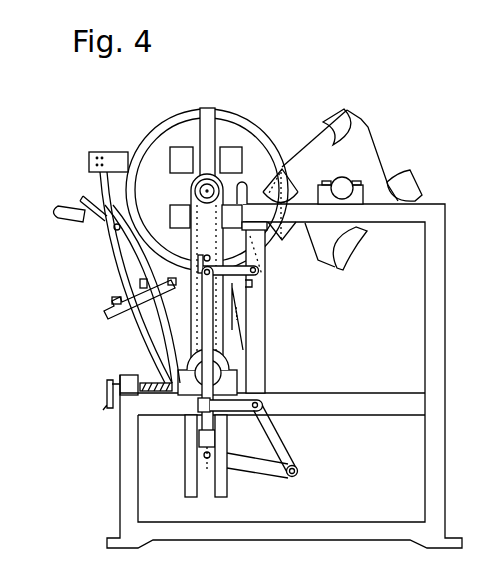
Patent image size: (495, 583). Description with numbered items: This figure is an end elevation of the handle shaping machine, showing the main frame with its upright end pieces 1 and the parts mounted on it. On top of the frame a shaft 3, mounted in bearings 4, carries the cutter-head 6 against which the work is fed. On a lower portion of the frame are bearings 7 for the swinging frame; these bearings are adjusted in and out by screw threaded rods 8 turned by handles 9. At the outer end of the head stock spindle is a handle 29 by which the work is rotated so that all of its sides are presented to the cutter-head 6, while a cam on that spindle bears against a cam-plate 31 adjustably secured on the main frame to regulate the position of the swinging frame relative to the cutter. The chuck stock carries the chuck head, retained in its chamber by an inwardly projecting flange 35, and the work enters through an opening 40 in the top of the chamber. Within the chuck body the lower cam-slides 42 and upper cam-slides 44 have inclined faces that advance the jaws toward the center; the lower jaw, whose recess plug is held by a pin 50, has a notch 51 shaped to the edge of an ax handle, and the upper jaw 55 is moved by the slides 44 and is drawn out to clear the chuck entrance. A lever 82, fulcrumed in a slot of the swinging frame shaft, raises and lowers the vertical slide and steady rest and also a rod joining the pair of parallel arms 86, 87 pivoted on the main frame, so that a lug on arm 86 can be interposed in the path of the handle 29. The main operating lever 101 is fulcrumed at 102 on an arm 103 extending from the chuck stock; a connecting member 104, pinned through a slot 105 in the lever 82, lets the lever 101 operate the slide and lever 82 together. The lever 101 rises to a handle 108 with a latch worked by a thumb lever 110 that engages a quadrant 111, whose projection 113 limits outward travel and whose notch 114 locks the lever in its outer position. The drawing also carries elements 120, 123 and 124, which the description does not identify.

The upright end piece 1 is at (113, 483).
The shaft 3 is at (354, 182).
The bearings 4 is at (343, 188).
The cutter-head 6 is at (316, 138).
The bearings 7 is at (233, 380).
The screw threaded rods 8 is at (140, 397).
The handles 9 is at (103, 398).
The handle 29 is at (203, 210).
The cam-plate 31 is at (248, 184).
The inwardly projecting flange 35 is at (207, 144).
The opening 40 is at (216, 108).
The cam-slides 42 is at (206, 216).
The cam-slides 44 is at (206, 160).
The pin 50 is at (160, 306).
The notch 51 is at (190, 430).
The upper jaw 55 is at (206, 489).
The lever 82 is at (205, 440).
The arm 86 is at (258, 274).
The arm 87 is at (240, 413).
The main operating lever 101 is at (142, 346).
The fulcrum 102 is at (297, 470).
The arm 103 is at (292, 438).
The connecting member 104 is at (205, 457).
The slot 105 is at (146, 285).
The handle 108 is at (62, 206).
The thumb lever 110 is at (82, 200).
The quadrant 111 is at (109, 316).
The projection 113 is at (100, 303).
The notch 114 is at (117, 297).
The block 120 is at (101, 151).
The rod 123 is at (362, 118).
The cam blade 124 is at (321, 125).